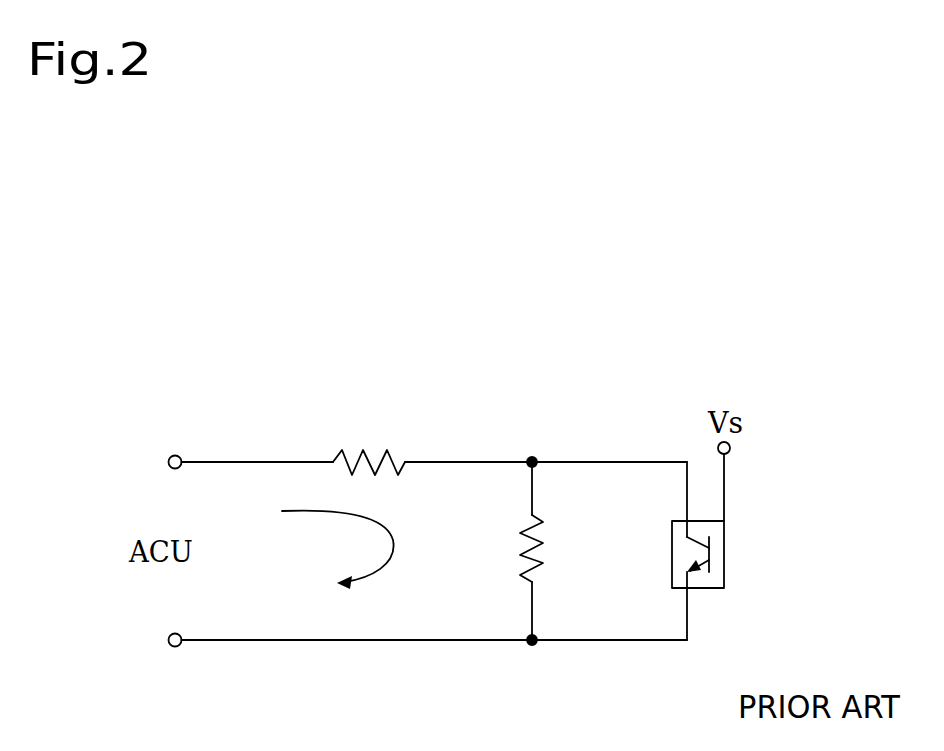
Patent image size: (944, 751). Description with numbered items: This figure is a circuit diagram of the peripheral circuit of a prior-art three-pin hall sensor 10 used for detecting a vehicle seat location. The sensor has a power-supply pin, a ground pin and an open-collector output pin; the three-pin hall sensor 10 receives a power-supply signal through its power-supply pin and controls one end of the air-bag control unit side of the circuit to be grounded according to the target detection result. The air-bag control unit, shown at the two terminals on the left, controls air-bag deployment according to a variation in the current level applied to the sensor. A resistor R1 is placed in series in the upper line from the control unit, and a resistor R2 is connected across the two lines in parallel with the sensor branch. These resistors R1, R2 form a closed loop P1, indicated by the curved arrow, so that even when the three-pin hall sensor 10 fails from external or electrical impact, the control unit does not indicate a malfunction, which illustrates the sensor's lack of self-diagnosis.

The three-pin hall sensor 10 is at (724, 560).
The resistor R1 is at (369, 443).
The resistor R2 is at (556, 551).
The closed loop P1 is at (338, 558).